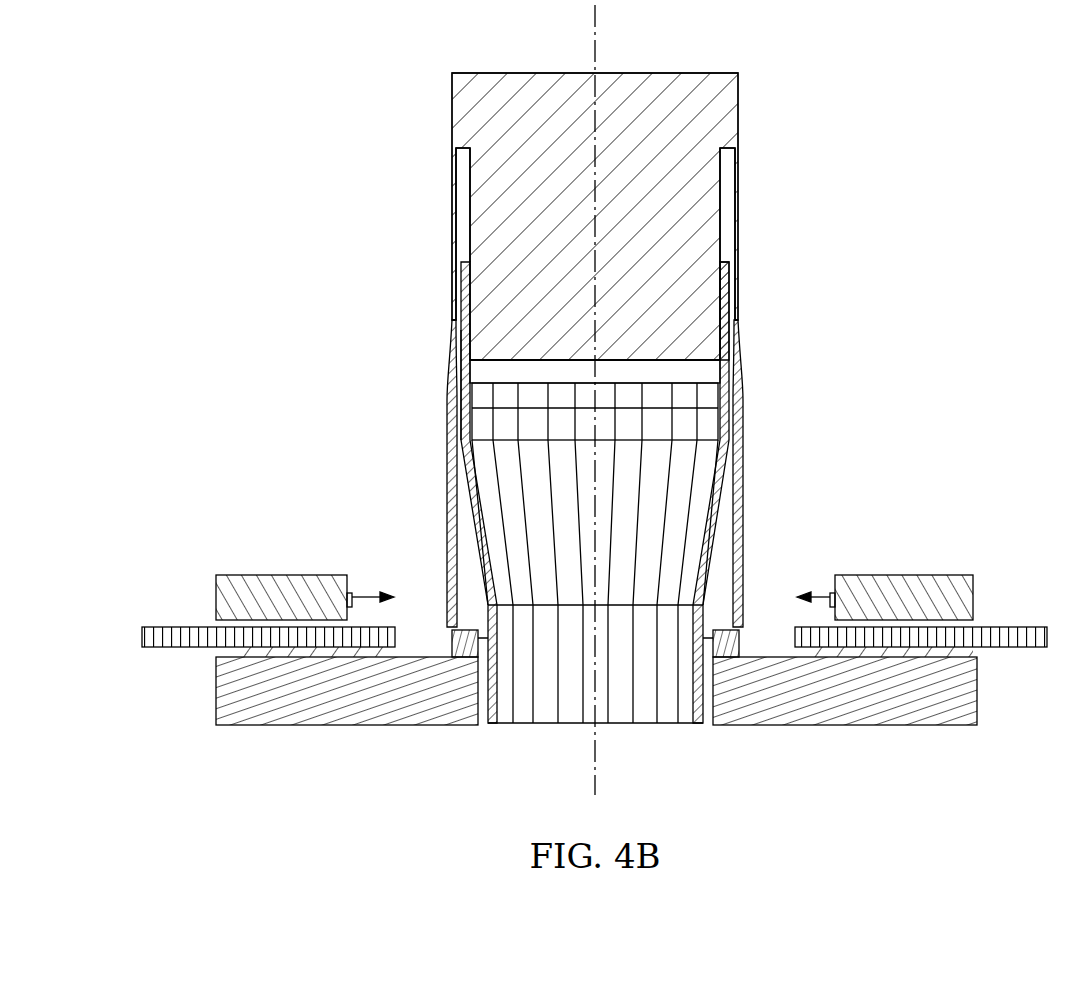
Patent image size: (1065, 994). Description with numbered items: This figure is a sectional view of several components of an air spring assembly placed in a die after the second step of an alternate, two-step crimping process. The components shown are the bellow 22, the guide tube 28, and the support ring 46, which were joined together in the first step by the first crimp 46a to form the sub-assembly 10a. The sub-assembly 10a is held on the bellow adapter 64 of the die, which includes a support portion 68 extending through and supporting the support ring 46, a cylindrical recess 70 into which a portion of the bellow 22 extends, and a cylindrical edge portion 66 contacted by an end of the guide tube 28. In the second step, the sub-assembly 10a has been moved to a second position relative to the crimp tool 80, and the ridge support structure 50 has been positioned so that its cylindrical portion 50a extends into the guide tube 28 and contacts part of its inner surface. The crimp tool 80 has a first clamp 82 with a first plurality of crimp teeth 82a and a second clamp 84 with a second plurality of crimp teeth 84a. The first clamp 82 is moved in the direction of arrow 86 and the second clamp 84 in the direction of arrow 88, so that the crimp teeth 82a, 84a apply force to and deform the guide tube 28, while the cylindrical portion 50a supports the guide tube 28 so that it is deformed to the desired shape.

The sub-assembly 10a is at (810, 144).
The bellow adapter 64 is at (726, 91).
The cylindrical recess 70 is at (466, 202).
The support portion 68 is at (573, 338).
The support ring 46 is at (548, 367).
The first crimp 46a is at (424, 370).
The cylindrical edge portion 66 is at (738, 330).
The guide tube 28 is at (744, 530).
The bellow 22 is at (646, 692).
The ridge support structure 50 is at (332, 693).
The cylindrical portion 50a is at (452, 630).
The crimp tool 80 is at (154, 682).
The first clamp 82 is at (217, 598).
The first plurality of crimp teeth 82a is at (352, 606).
The arrow 86 is at (368, 592).
The second clamp 84 is at (963, 596).
The second plurality of crimp teeth 84a is at (833, 606).
The arrow 88 is at (823, 592).